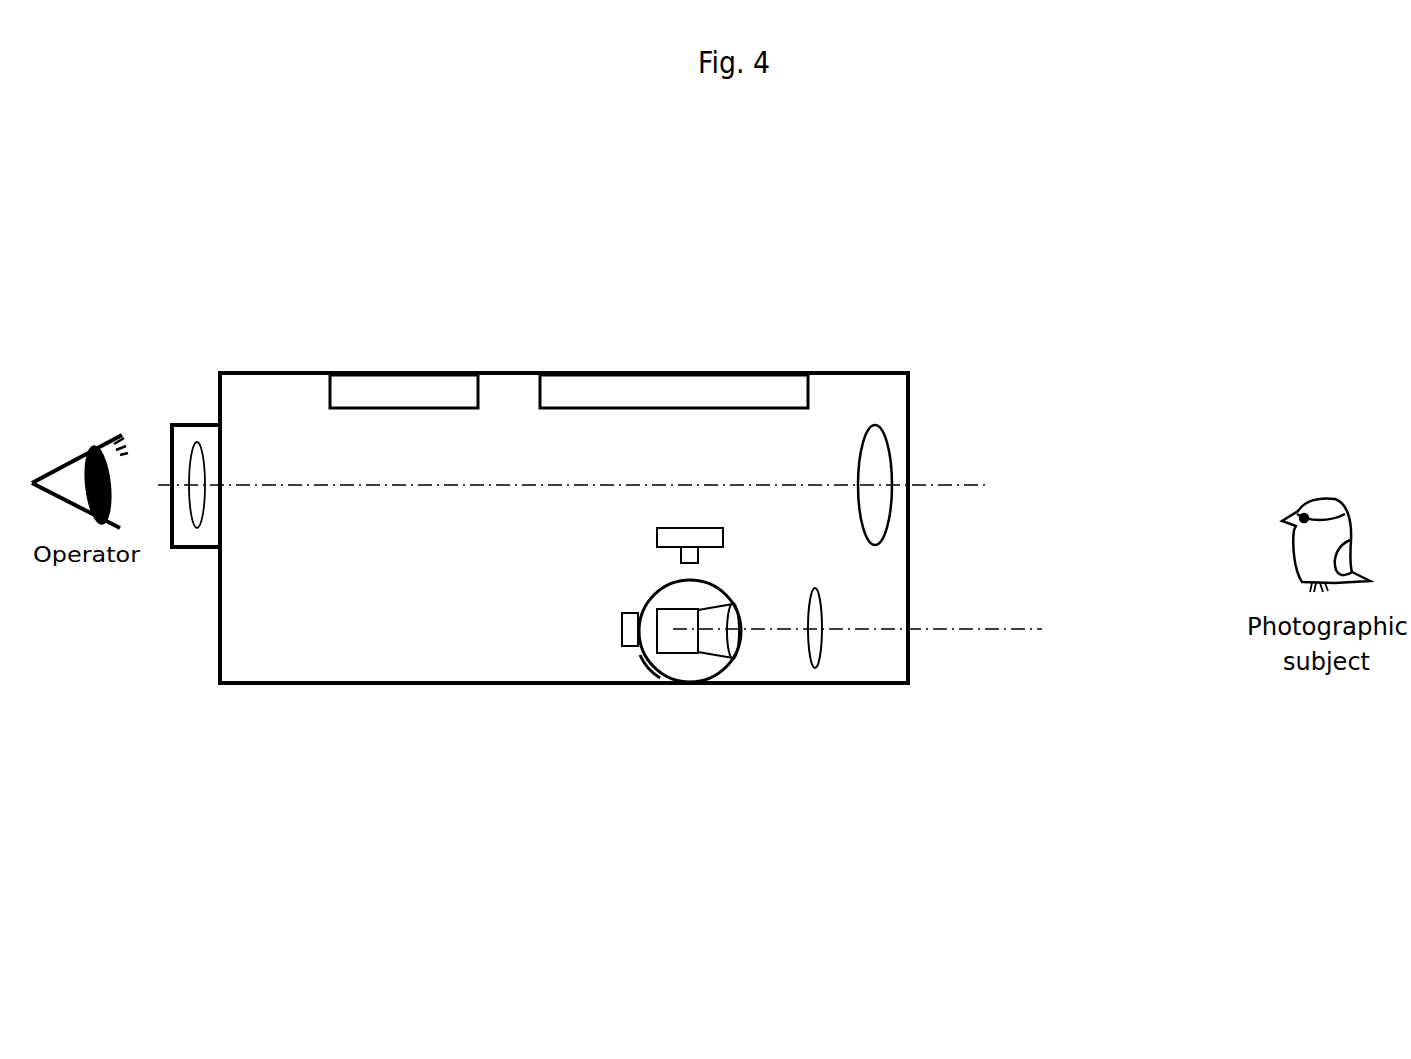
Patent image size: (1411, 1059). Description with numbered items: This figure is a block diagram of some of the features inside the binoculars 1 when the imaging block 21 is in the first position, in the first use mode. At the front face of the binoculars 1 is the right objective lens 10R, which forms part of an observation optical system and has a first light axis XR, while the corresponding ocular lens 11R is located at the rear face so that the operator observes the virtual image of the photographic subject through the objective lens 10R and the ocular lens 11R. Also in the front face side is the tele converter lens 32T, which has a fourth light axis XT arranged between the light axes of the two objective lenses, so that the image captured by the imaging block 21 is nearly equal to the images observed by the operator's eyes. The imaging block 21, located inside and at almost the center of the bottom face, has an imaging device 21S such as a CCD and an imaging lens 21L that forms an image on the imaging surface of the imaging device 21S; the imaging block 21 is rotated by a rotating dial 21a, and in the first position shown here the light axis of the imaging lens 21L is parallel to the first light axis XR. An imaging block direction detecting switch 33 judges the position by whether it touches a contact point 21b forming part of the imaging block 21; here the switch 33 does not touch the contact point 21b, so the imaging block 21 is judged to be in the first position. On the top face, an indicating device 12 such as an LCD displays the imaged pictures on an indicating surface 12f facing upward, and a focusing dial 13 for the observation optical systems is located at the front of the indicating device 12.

The binoculars 1 is at (913, 373).
The objective lens 10R is at (890, 514).
The ocular lens 11R is at (187, 505).
The indicating device 12 is at (622, 392).
The indicating surface 12f is at (747, 373).
The focusing dial 13 is at (367, 393).
The imaging block 21 is at (653, 672).
The rotating dial 21a is at (648, 662).
The contact point 21b is at (622, 625).
The imaging device 21S is at (678, 633).
The imaging lens 21L is at (735, 640).
The tele converter lens 32T is at (817, 643).
The imaging block direction detecting switch 33 is at (657, 532).
The first light axis XR is at (965, 487).
The fourth light axis XT is at (1030, 628).